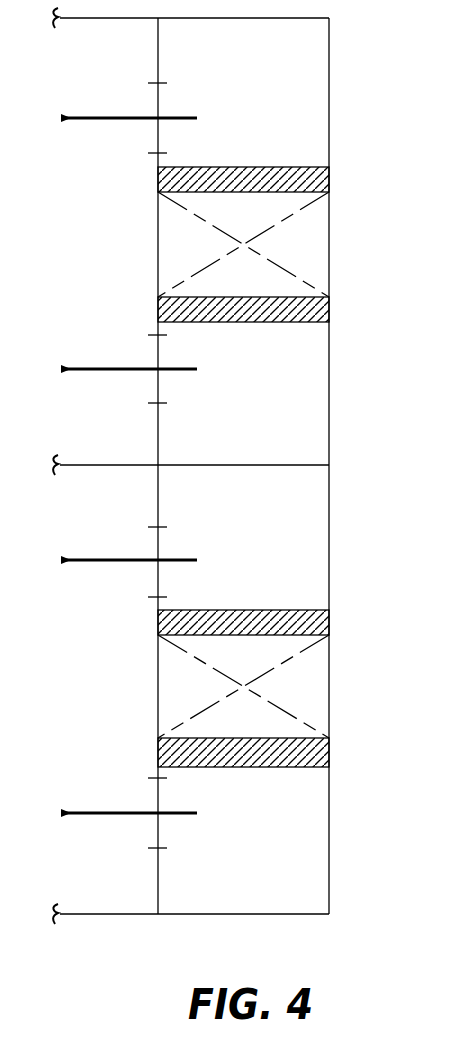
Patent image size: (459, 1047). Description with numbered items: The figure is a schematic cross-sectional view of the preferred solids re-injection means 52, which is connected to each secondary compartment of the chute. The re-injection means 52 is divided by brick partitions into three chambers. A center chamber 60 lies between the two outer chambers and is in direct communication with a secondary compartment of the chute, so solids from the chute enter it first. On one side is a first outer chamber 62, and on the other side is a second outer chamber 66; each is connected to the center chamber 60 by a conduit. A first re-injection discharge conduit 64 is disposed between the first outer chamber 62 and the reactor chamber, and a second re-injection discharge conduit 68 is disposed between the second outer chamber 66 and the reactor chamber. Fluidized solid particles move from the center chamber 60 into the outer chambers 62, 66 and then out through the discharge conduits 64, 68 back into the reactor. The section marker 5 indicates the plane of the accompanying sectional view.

The re-injection means 52 is at (340, 423).
The center chamber 60 is at (330, 257).
The first outer chamber 62 is at (330, 100).
The first re-injection discharge conduit 64 is at (155, 99).
The second outer chamber 66 is at (330, 360).
The second re-injection discharge conduit 68 is at (155, 392).
The section line for FIG. 5 is at (150, 688).